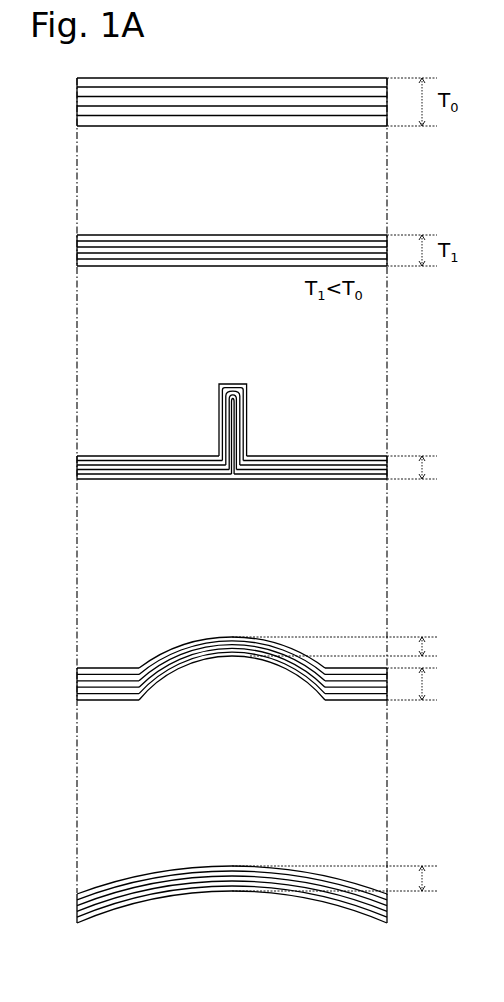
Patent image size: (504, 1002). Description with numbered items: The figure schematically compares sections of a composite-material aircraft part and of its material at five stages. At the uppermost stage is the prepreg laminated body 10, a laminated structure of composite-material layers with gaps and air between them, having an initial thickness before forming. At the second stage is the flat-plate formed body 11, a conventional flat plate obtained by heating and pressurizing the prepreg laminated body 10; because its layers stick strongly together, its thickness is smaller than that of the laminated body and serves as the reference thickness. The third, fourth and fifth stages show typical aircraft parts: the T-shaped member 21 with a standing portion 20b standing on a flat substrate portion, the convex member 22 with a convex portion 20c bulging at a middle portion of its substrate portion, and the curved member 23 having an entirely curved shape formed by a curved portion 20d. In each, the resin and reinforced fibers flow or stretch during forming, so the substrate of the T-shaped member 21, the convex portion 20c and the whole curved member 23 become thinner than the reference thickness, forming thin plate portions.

The prepreg laminated body 10 is at (93, 125).
The flat-plate formed body 11 is at (93, 260).
The standing portion 20b is at (247, 384).
The convex portion 20c is at (210, 640).
The curved portion 20d is at (223, 863).
The T-shaped member 21 is at (272, 431).
The convex member 22 is at (272, 654).
The curved member 23 is at (272, 871).